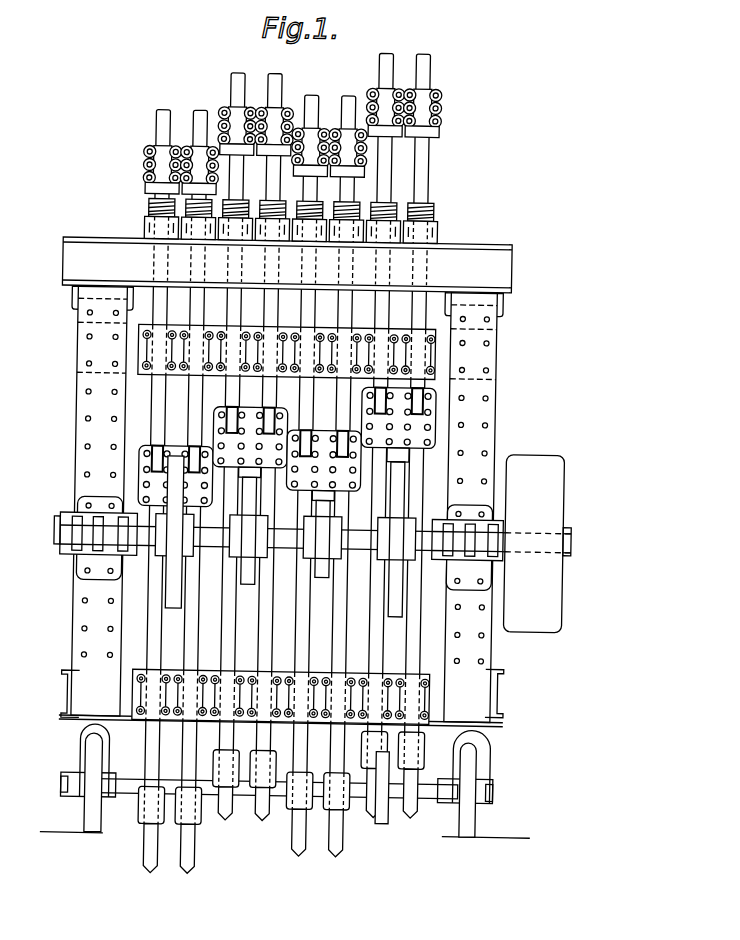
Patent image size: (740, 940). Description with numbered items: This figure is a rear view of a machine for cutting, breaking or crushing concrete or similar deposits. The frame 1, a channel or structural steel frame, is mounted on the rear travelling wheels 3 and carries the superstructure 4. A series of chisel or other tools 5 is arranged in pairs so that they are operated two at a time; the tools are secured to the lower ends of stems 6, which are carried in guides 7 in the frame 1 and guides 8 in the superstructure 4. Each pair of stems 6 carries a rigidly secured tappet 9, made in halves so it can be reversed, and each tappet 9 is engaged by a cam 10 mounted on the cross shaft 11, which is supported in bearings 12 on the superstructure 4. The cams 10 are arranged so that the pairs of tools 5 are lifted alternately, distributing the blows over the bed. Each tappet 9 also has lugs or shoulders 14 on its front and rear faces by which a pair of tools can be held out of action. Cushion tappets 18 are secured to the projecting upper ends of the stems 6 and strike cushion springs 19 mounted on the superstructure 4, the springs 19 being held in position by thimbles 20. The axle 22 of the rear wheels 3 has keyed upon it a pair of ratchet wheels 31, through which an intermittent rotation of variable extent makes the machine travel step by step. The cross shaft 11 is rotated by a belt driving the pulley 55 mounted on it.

The frame 1 is at (114, 698).
The rear travelling wheels 3 is at (95, 817).
The superstructure 4 is at (509, 415).
The chisel or cutting tools 5 is at (262, 828).
The stems 6 is at (190, 112).
The guides 7 is at (373, 701).
The guides 8 is at (392, 367).
The tappet 9 is at (243, 411).
The cams 10 is at (252, 586).
The cross shaft 11 is at (62, 539).
The bearings 12 is at (93, 522).
The lugs or shoulders 14 is at (195, 450).
The cushion tappets 18 is at (410, 106).
The cushion springs 19 is at (143, 211).
The thimbles 20 is at (139, 232).
The axle 22 is at (440, 797).
The ratchet wheels 31 is at (385, 822).
The pulley 55 is at (561, 602).